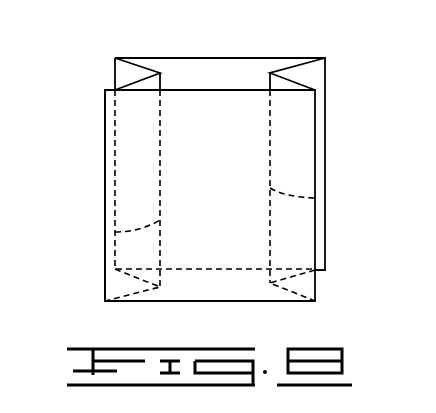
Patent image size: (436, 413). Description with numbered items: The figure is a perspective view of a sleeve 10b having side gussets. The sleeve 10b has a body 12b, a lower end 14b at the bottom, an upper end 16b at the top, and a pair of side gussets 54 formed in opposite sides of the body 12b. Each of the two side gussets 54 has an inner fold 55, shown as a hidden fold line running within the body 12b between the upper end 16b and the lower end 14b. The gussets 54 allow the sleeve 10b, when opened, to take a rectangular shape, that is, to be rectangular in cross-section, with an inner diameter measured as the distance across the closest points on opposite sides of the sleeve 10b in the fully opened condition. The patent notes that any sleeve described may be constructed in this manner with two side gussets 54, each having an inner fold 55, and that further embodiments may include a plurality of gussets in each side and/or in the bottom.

The sleeve 10b is at (357, 100).
The body 12b is at (103, 138).
The lower end 14b is at (228, 301).
The upper end 16b is at (222, 58).
The side gusset 54 is at (128, 83).
The inner fold 55 is at (115, 232).